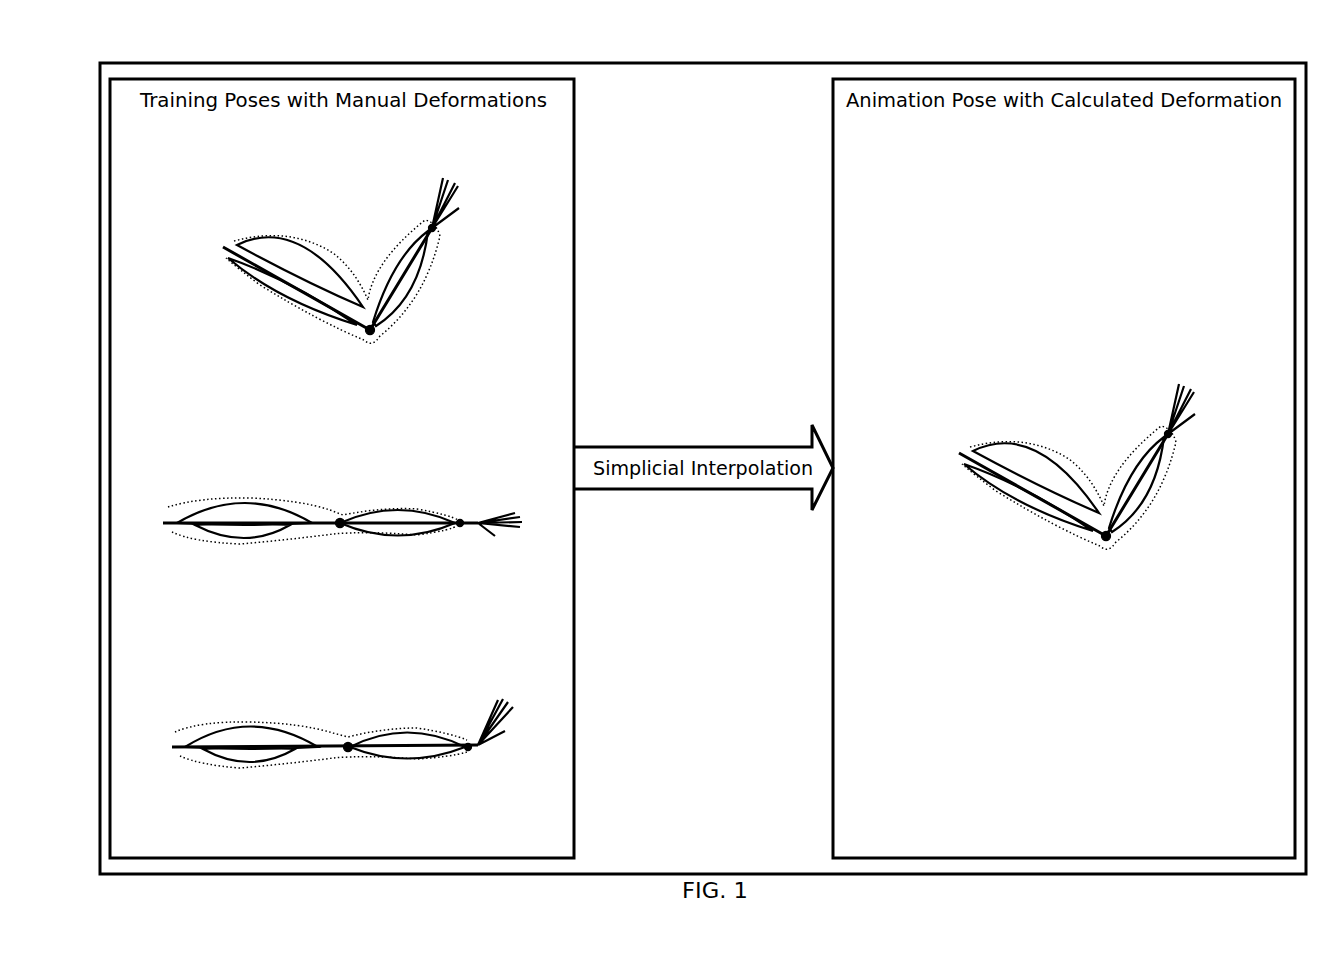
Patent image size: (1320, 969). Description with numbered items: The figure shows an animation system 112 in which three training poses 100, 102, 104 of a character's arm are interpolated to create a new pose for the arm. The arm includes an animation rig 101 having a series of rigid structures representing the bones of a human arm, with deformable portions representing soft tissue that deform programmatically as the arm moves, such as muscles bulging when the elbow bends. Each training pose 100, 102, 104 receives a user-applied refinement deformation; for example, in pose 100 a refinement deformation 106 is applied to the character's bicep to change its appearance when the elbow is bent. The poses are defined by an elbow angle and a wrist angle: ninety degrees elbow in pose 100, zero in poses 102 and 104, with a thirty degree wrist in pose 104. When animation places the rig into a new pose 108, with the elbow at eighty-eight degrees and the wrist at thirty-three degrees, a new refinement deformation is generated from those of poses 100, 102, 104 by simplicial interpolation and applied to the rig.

The training pose 100 is at (207, 208).
The animation rig 101 is at (223, 248).
The training pose 102 is at (210, 460).
The training pose 104 is at (210, 683).
The refinement deformation 106 is at (328, 246).
The pose 108 is at (938, 410).
The animation system 112 is at (719, 850).